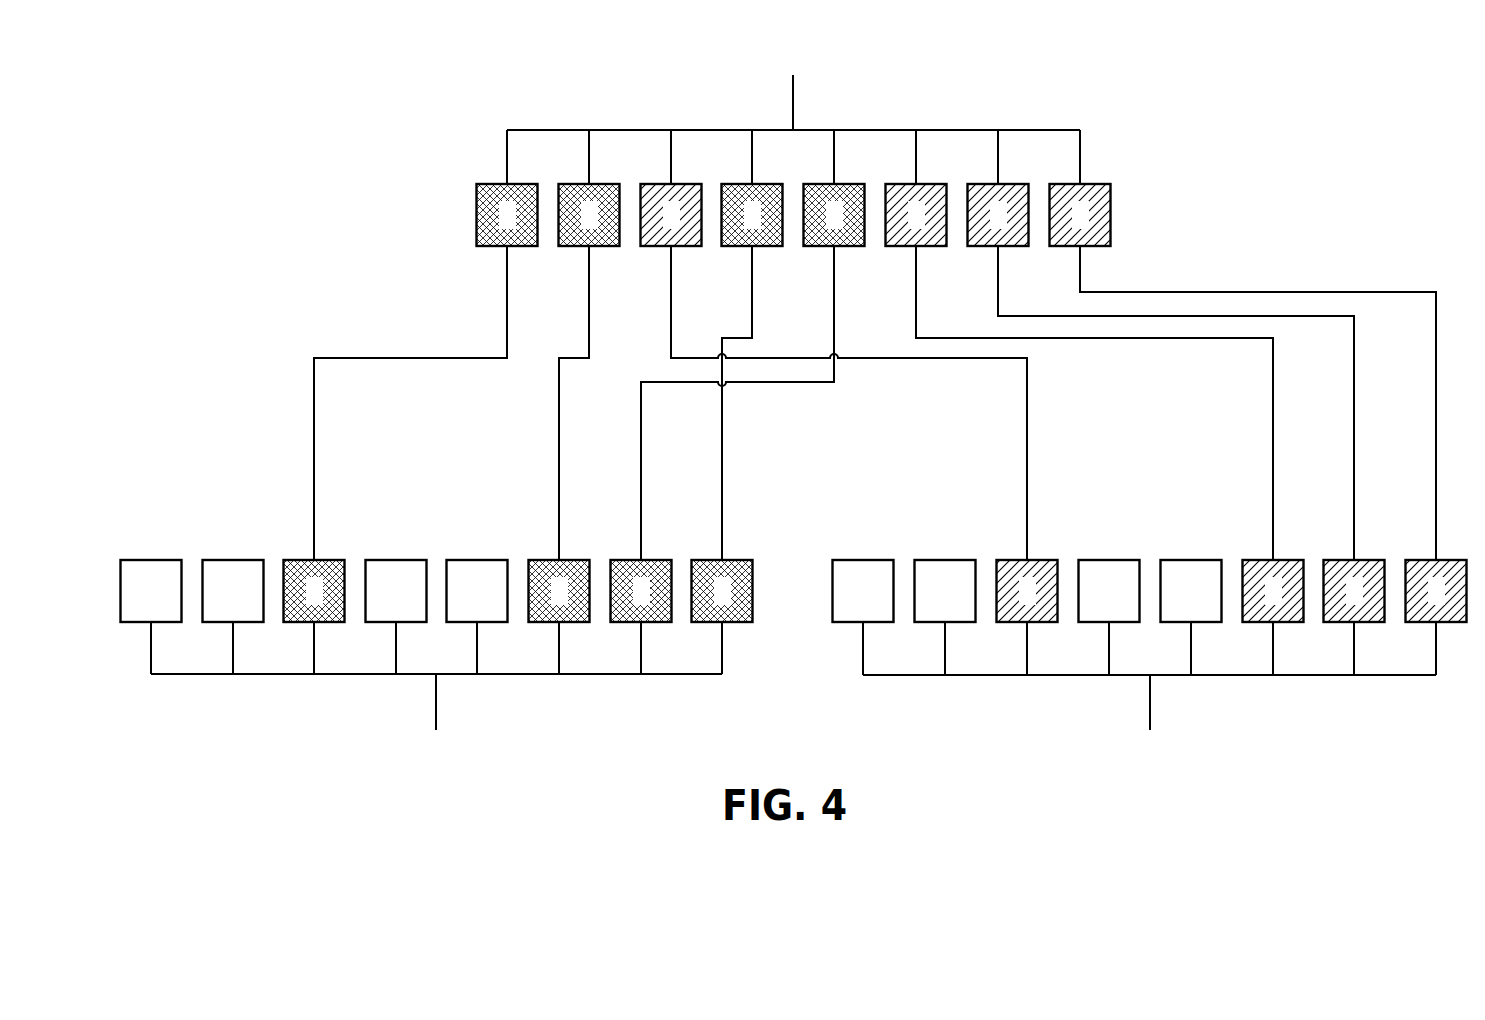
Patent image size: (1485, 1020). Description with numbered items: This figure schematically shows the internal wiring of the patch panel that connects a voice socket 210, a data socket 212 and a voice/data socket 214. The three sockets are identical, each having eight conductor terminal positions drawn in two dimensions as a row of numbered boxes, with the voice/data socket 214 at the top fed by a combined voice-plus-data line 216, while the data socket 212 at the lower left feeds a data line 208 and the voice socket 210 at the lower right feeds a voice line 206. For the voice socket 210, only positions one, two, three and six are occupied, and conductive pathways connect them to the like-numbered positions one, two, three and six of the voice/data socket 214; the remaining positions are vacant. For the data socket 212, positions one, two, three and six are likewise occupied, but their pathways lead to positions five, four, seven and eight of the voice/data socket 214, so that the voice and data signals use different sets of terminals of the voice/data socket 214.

The voice/data socket 214 is at (513, 106).
The voice plus data channel 216 is at (793, 100).
The data socket 212 is at (203, 523).
The voice socket 210 is at (877, 523).
The data channel 208 is at (436, 706).
The voice channel 206 is at (1150, 706).